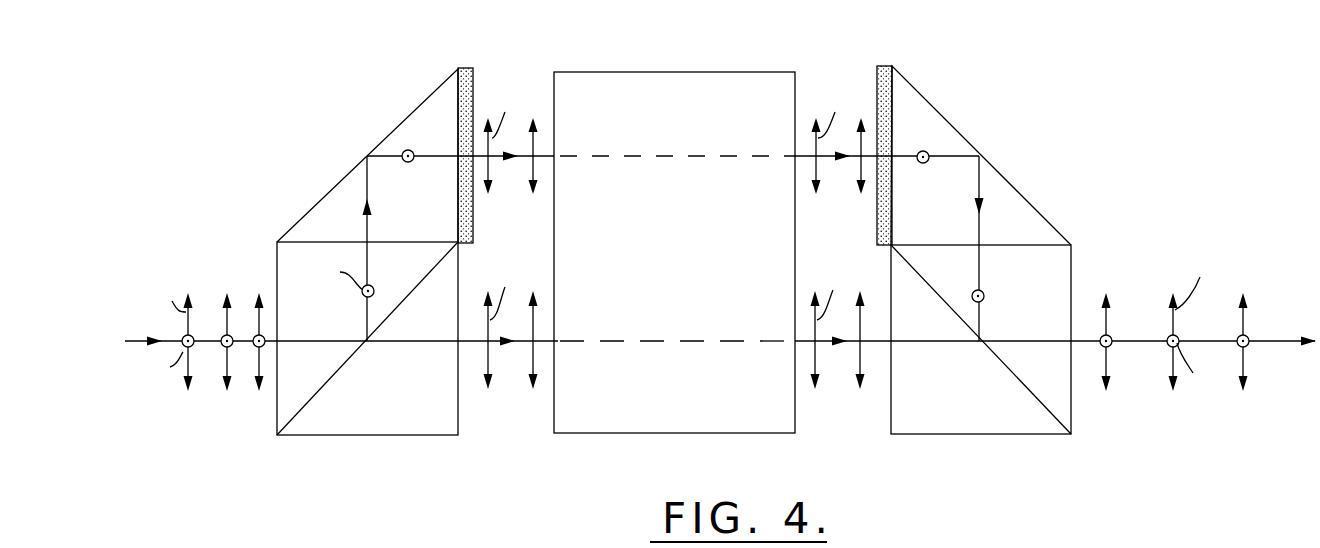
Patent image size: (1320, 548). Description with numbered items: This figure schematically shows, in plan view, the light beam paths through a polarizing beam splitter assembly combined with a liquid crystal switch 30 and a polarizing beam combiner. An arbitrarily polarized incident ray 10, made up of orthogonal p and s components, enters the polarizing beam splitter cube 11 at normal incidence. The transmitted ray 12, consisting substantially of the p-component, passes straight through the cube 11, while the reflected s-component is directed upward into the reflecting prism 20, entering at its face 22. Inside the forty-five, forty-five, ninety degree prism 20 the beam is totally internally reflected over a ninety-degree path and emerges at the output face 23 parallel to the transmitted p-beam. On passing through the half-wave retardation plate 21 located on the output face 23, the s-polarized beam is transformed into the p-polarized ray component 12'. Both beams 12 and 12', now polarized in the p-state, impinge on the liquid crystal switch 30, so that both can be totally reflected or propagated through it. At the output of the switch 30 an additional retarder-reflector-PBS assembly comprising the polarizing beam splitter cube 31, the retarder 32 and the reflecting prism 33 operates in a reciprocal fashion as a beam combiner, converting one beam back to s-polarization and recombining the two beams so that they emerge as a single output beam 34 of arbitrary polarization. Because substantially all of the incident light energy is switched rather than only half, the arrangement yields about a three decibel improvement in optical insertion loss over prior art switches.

The incident ray 10 is at (142, 341).
The polarizing beam splitter cube 11 is at (377, 436).
The transmitted ray 12 is at (584, 353).
The p-polarized ray component 12' is at (721, 200).
The reflecting prism 20 is at (410, 110).
The half-wave retardation plate 21 is at (467, 67).
The prism entrance face 22 is at (370, 241).
The prism output face 23 is at (457, 154).
The liquid crystal switch 30 is at (662, 72).
The polarizing beam splitter cube of output assembly 31 is at (977, 435).
The retarder of output assembly 32 is at (887, 65).
The reflector of output assembly 33 is at (943, 118).
The single output beam 34 is at (1287, 338).